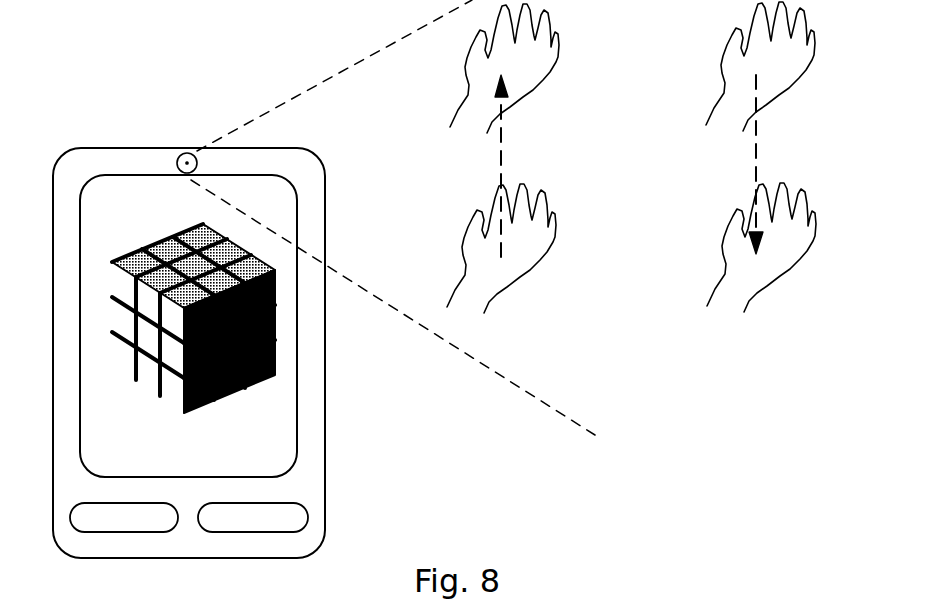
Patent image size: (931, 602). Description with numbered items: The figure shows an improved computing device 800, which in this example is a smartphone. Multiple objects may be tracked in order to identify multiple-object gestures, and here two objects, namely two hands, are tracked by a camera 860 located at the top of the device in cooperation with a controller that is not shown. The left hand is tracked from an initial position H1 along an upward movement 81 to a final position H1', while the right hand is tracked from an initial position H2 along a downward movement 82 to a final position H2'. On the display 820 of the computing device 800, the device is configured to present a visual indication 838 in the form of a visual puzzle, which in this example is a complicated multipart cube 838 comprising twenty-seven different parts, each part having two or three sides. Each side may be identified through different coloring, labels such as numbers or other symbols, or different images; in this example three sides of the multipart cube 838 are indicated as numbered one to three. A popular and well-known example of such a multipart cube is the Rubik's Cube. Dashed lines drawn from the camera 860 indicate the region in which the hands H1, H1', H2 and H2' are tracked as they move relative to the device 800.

The computing device 800 is at (88, 122).
The display 820 is at (295, 457).
The camera 860 is at (187, 152).
The multipart cube 838 is at (273, 368).
The movement 81 is at (516, 166).
The movement 82 is at (740, 164).
The initial position of left hand H1 is at (501, 277).
The final position of left hand H1' is at (482, 68).
The initial position of right hand H2 is at (779, 72).
The final position of right hand H2' is at (761, 267).